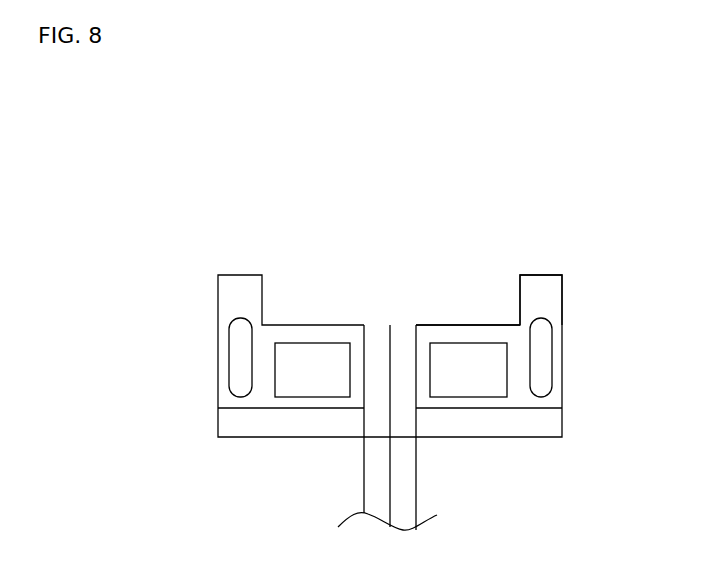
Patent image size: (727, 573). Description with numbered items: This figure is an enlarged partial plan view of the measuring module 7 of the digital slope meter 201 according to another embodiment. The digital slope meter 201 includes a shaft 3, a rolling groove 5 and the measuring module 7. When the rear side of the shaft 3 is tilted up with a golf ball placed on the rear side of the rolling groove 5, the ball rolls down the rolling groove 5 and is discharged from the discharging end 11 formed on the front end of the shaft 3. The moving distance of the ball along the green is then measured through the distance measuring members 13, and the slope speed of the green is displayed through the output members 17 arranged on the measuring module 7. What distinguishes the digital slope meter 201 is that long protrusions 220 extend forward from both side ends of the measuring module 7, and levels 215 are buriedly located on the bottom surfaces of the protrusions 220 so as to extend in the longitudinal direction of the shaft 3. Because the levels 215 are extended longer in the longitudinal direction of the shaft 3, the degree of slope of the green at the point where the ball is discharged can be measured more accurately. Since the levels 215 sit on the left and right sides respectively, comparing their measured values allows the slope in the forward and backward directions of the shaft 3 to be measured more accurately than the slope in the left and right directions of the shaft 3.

The digital slope meter 201 is at (545, 178).
The measuring module 7 is at (562, 397).
The discharging end 11 is at (383, 323).
The distance measuring member 13 is at (441, 325).
The output member 17 is at (488, 372).
The level 215 is at (230, 340).
The protrusion 220 is at (541, 288).
The shaft 3 is at (365, 478).
The rolling groove 5 is at (392, 483).